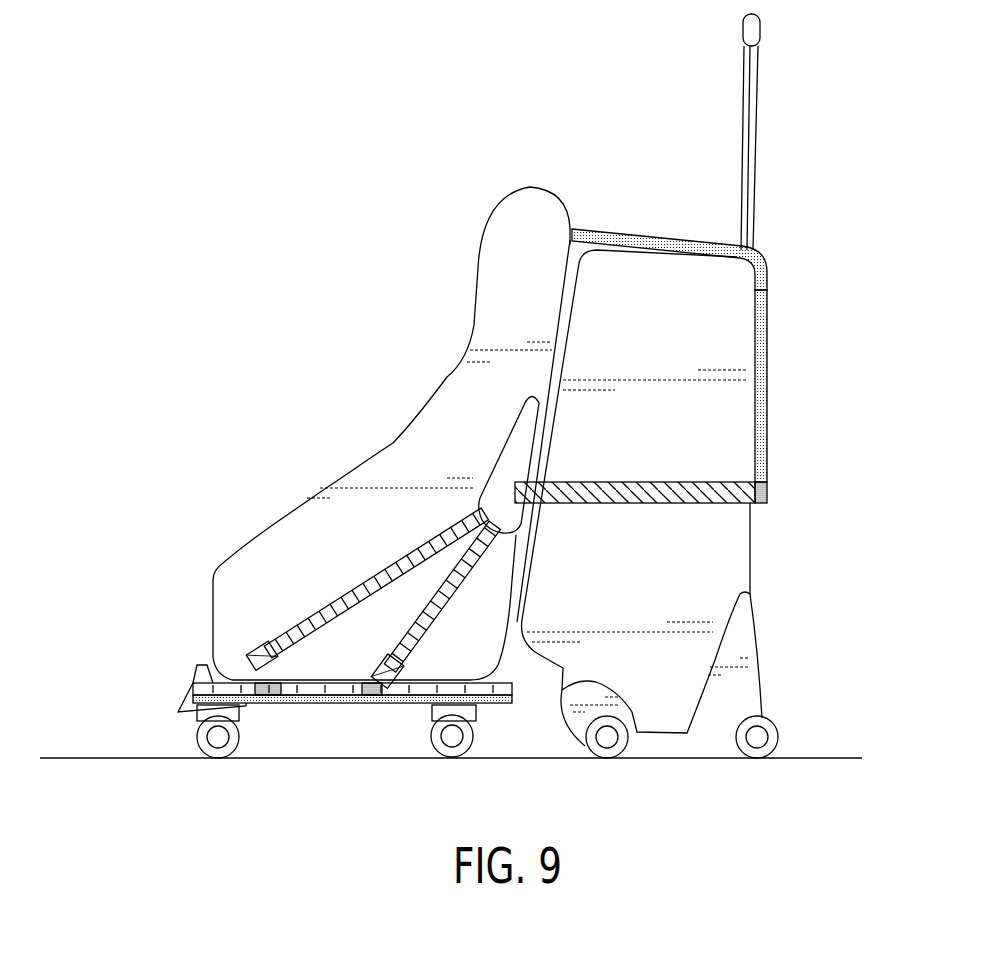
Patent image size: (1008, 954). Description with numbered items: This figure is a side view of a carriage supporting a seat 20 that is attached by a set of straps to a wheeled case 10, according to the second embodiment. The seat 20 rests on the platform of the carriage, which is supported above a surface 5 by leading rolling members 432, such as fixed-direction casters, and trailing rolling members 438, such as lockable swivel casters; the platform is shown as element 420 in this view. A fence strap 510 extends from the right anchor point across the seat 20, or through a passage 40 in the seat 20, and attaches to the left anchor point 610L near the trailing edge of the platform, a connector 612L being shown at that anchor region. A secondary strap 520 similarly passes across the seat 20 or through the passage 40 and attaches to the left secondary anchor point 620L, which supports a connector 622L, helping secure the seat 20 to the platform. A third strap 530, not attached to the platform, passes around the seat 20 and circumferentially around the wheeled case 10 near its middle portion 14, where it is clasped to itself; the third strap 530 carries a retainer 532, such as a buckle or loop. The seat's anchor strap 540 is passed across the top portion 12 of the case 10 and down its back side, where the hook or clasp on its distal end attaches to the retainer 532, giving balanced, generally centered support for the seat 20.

The surface 5 is at (800, 758).
The wheeled case 10 is at (665, 336).
The top portion 12 is at (786, 264).
The middle portion 14 is at (786, 480).
The seat 20 is at (477, 262).
The passage 40 is at (510, 450).
The base platform 420 is at (197, 674).
The leading rolling members 432 is at (487, 735).
The trailing rolling members 438 is at (182, 737).
The fence strap 510 is at (411, 552).
The secondary strap 520 is at (465, 562).
The third strap 530 is at (605, 482).
The retainer 532 is at (764, 510).
The anchor strap 540 is at (615, 230).
The left anchor point 610L is at (238, 672).
The platform pivot 612L is at (281, 660).
The left secondary anchor point 620L is at (362, 673).
The connector 622L is at (405, 664).